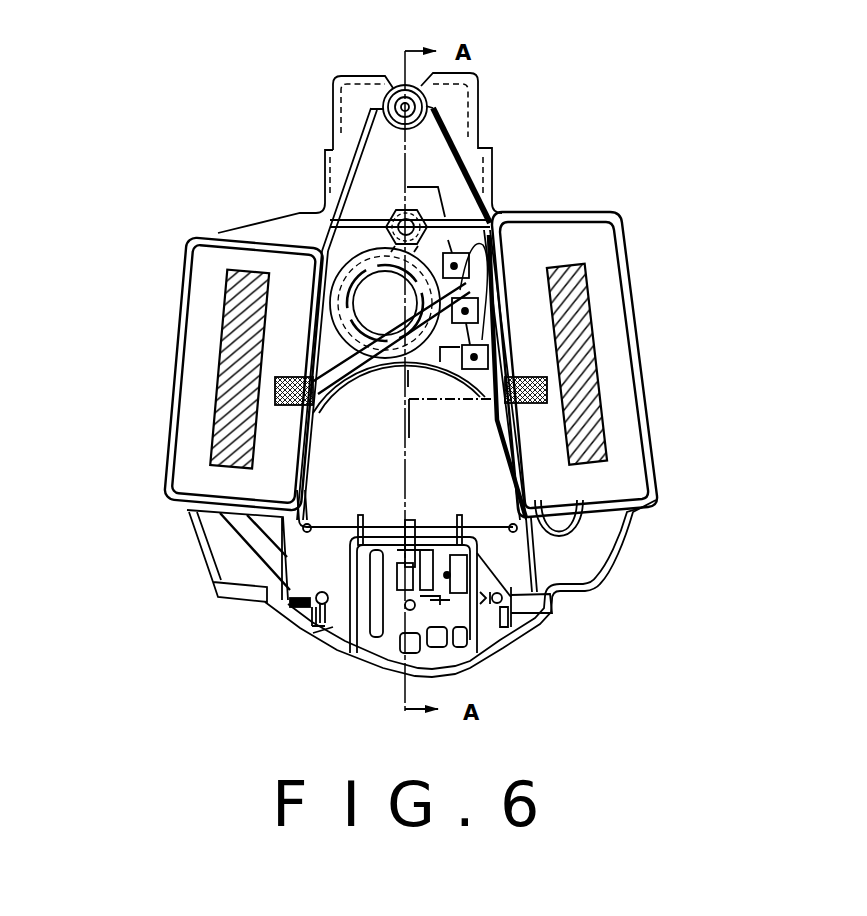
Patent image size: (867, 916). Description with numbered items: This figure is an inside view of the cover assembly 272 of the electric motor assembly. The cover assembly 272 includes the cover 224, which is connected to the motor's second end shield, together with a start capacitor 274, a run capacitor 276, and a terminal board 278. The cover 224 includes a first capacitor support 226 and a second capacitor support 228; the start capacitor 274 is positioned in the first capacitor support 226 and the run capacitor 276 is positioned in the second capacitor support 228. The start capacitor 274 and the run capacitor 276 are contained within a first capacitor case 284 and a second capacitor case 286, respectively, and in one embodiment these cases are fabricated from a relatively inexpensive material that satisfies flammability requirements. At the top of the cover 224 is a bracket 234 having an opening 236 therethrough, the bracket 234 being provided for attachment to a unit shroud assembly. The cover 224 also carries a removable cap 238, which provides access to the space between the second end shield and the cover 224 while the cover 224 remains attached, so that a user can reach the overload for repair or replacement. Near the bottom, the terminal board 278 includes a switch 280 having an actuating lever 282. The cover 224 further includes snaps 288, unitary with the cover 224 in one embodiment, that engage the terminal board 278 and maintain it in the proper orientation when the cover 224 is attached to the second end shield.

The cover 224 is at (330, 253).
The first capacitor support 226 is at (217, 233).
The second capacitor support 228 is at (581, 207).
The bracket 234 is at (331, 106).
The opening 236 is at (392, 90).
The removable cap 238 is at (338, 262).
The cover assembly 272 is at (490, 218).
The start capacitor 274 is at (211, 260).
The run capacitor 276 is at (610, 328).
The terminal board 278 is at (292, 641).
The switch 280 is at (362, 566).
The actuating lever 282 is at (190, 512).
The first capacitor case 284 is at (192, 332).
The second capacitor case 286 is at (593, 238).
The snaps 288 is at (207, 571).